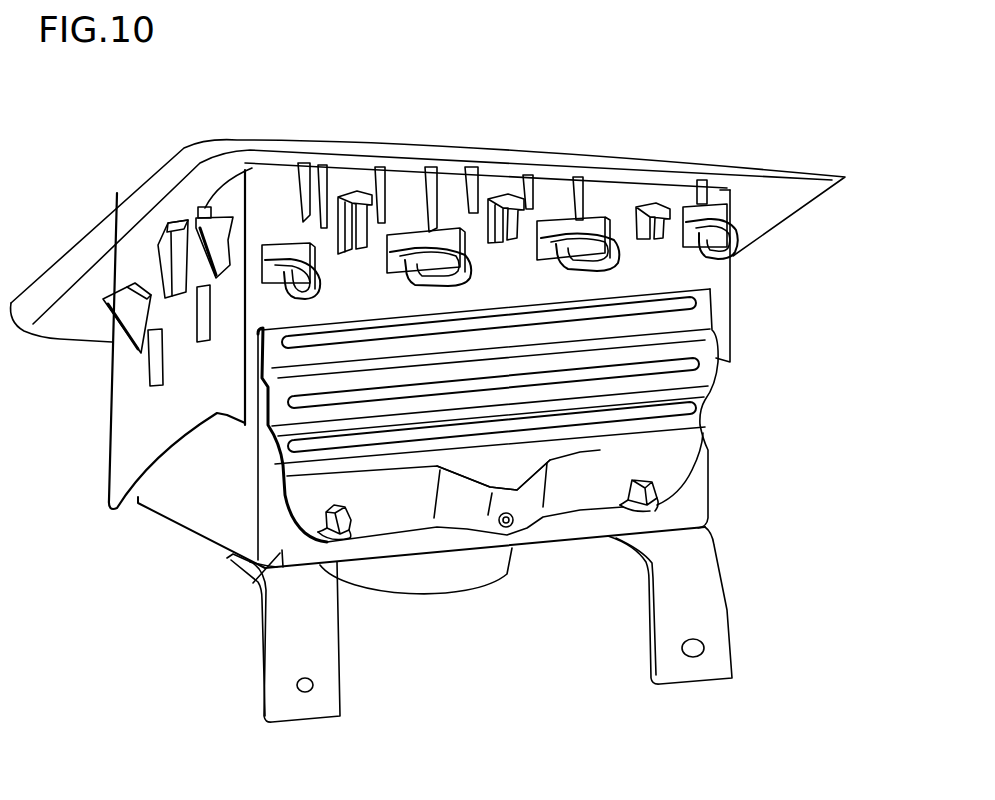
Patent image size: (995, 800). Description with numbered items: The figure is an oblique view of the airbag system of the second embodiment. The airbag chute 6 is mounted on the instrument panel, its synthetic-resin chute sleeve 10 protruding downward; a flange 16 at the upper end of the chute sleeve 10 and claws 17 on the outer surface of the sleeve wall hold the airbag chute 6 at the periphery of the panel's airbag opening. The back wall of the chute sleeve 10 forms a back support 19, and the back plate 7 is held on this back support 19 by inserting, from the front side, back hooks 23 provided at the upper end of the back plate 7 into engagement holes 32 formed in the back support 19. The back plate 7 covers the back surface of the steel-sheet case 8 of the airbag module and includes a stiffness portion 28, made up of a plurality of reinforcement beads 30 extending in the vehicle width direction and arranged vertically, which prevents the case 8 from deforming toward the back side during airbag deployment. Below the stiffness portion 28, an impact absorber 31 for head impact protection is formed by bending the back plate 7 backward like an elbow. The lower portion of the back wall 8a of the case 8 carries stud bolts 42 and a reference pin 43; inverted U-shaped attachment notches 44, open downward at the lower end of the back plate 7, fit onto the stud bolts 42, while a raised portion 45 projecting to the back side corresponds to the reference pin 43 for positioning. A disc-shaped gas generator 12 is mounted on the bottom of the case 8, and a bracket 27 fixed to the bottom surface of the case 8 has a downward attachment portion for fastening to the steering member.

The airbag chute 6 is at (784, 153).
The flange 16 is at (127, 192).
The chute sleeve 10 is at (128, 402).
The back support 19 is at (507, 277).
The claws 17 is at (133, 313).
The back hooks 23 is at (473, 260).
The engagement holes 32 is at (267, 255).
The back plate 7 is at (718, 378).
The reinforcement beads 30 is at (700, 349).
The impact absorber 31 is at (698, 449).
The stiffness portion 28 is at (443, 405).
The case 8 is at (176, 529).
The back wall 8a is at (263, 592).
The bracket 27 is at (257, 683).
The gas generator 12 is at (472, 597).
The attachment notches 44 is at (330, 538).
The stud bolt 42 is at (352, 536).
The raised portion 45 is at (463, 508).
The reference pin 43 is at (504, 532).